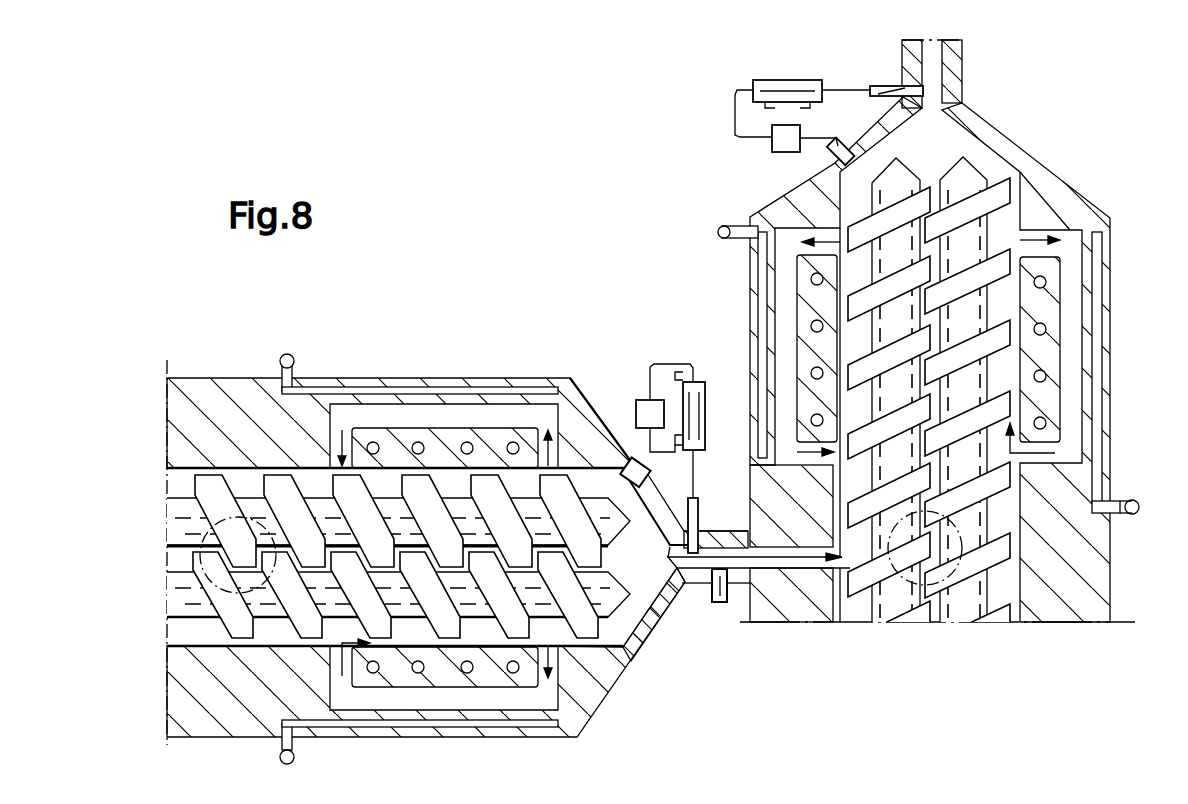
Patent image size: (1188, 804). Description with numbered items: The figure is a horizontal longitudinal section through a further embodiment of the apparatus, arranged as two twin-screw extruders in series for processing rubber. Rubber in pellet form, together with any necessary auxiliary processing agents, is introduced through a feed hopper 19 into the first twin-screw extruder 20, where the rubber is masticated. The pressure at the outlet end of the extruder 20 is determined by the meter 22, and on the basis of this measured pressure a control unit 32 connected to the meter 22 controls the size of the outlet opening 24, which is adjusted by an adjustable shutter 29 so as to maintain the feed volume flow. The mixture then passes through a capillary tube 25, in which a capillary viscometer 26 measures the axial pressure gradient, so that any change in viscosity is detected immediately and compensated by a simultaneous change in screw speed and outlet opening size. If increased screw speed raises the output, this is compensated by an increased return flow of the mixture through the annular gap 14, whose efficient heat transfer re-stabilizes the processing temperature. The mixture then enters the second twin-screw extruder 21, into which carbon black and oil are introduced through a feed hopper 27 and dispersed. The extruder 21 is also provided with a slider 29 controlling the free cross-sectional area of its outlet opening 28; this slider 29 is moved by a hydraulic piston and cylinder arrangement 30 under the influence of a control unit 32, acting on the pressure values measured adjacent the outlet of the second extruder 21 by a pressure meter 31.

The annular gap 14 is at (456, 700).
The feed hopper 19 is at (205, 540).
The first twin-screw extruder 20 is at (443, 333).
The second twin-screw extruder 21 is at (720, 293).
The meter 22 is at (630, 460).
The outlet opening 24 is at (682, 585).
The capillary tube 25 is at (765, 570).
The capillary viscometer 26 is at (722, 604).
The feed hopper 27 is at (900, 585).
The outlet opening 28 is at (933, 102).
The slider 29 is at (693, 555).
The hydraulic piston and cylinder arrangement 30 is at (753, 90).
The pressure meter 31 is at (834, 153).
The control unit 32 is at (772, 140).